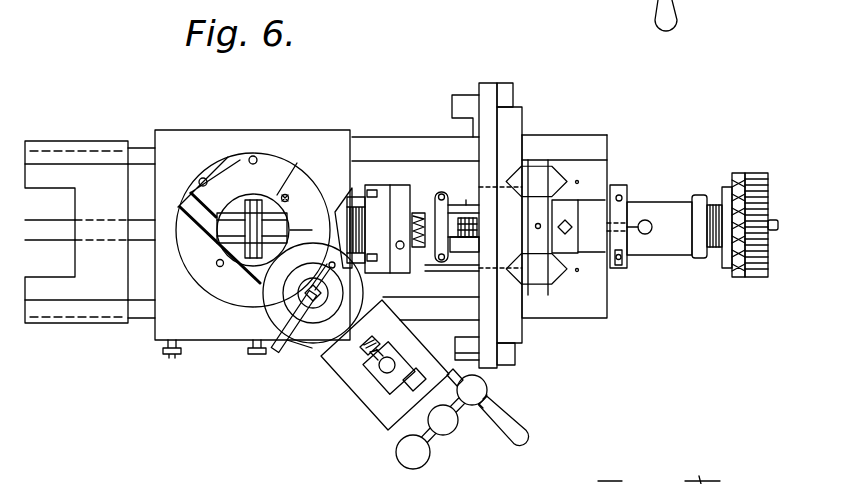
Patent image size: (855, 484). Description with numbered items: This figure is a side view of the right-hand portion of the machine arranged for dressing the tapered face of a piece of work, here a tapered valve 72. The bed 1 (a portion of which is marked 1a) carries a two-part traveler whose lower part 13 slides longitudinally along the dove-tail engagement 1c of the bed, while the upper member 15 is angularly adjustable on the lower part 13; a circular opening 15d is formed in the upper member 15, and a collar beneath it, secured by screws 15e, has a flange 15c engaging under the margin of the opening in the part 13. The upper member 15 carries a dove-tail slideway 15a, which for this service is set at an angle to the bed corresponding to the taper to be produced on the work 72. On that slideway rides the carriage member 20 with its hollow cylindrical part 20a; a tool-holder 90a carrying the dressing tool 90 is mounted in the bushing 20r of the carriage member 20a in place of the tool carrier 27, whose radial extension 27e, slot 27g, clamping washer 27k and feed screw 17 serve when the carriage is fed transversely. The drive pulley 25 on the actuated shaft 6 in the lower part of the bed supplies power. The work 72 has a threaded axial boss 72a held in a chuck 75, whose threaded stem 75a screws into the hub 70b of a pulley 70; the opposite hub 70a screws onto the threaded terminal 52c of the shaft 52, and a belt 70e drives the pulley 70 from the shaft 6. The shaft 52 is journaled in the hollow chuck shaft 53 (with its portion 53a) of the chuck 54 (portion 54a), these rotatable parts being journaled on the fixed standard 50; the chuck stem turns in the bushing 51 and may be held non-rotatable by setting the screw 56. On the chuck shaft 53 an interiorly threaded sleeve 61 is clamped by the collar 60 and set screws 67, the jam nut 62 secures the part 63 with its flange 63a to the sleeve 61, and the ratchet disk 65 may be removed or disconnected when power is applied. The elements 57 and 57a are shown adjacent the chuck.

The bed 1 is at (90, 232).
The bracket flange 1a is at (61, 147).
The dove-tail slideway 1c is at (570, 142).
The shaft 6 is at (42, 231).
The lower traveler member 13 is at (177, 336).
The upper traveler member 15 is at (215, 290).
The dove-tail slideway 15a is at (186, 200).
The collar flange 15c is at (219, 265).
The circular opening 15d is at (293, 168).
The screws 15e is at (289, 197).
The feed screw 17 is at (362, 346).
The carriage member 20 is at (268, 322).
The hollow cylindrical part 20a is at (348, 329).
The hub 20r is at (278, 298).
The drive pulley 25 is at (247, 253).
The tool carrier 27 is at (370, 405).
The radial extension 27e is at (390, 416).
The slot 27g is at (350, 366).
The clamping washer 27k is at (370, 387).
The fixed standard 50 is at (542, 287).
The bushing 51 is at (572, 208).
The shaft 52 is at (487, 236).
The threaded terminal 52c is at (466, 198).
The hollow chuck shaft 53 is at (593, 221).
The frame post 53a is at (512, 124).
The chuck 54 is at (487, 83).
The plate block 54a is at (513, 92).
The screw 56 is at (573, 230).
The handle 57 is at (473, 328).
The bracket 57a is at (457, 95).
The collar 60 is at (620, 188).
The interiorly-threaded sleeve 61 is at (671, 201).
The jam nut 62 is at (727, 185).
The part 63 is at (715, 250).
The flange 63a is at (734, 183).
The ratchet disk 65 is at (762, 274).
The set screws 67 is at (623, 259).
The pulley 70 is at (437, 192).
The hub 70a is at (463, 243).
The hub 70b is at (438, 283).
The belt 70e is at (449, 207).
The tapered valve 72 is at (350, 187).
The threaded axial boss 72a is at (358, 197).
The chuck 75 is at (382, 272).
The threaded stem 75a is at (418, 210).
The dressing tool 90 is at (272, 350).
The tool-holder 90a is at (318, 303).